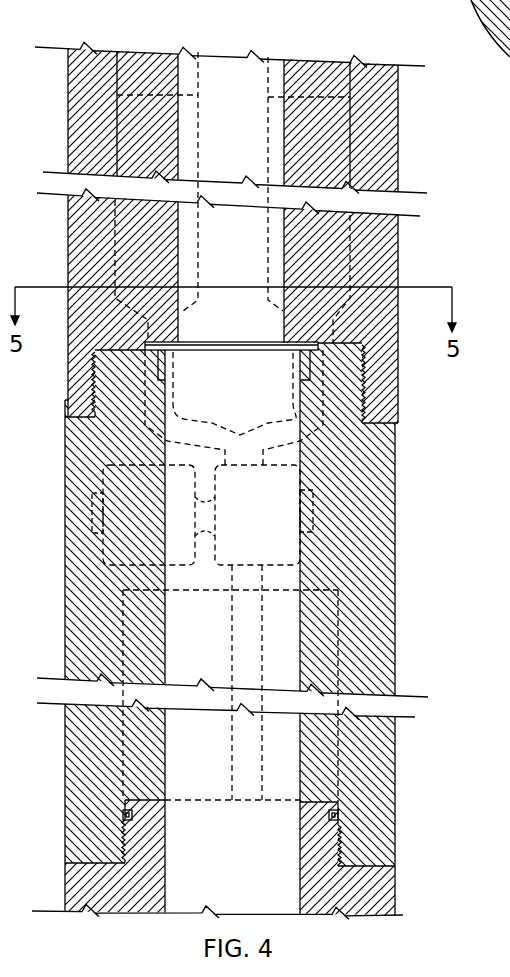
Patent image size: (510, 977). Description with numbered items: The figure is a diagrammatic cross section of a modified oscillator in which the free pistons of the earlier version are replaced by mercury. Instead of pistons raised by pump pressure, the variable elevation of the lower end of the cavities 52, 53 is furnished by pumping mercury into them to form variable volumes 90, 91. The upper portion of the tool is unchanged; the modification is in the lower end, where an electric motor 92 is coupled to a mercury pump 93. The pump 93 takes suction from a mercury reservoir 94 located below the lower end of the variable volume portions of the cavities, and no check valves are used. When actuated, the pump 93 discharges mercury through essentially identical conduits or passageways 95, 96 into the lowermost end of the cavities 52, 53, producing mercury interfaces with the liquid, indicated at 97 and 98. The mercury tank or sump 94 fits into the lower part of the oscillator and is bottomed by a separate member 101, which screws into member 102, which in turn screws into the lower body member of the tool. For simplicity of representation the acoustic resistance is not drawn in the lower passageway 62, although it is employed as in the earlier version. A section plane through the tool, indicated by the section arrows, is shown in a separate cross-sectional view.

The cavity 52 is at (148, 62).
The cavity 53 is at (315, 77).
The mercury interface 97 is at (140, 93).
The mercury interface 98 is at (310, 97).
The variable volume 90 is at (128, 248).
The variable volume 91 is at (333, 247).
The conduit or passageway 95 is at (155, 388).
The conduit or passageway 96 is at (315, 382).
The electric motor 92 is at (118, 482).
The mercury pump 93 is at (288, 483).
The mercury reservoir 94 is at (283, 624).
The member 102 is at (387, 655).
The separate member 101 is at (375, 880).
The lower passageway 62 is at (248, 865).